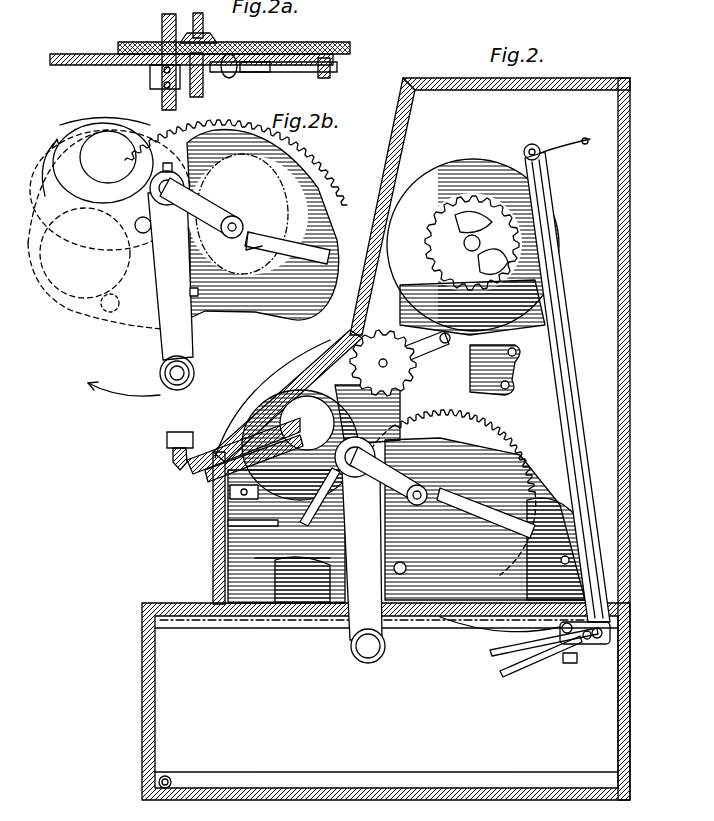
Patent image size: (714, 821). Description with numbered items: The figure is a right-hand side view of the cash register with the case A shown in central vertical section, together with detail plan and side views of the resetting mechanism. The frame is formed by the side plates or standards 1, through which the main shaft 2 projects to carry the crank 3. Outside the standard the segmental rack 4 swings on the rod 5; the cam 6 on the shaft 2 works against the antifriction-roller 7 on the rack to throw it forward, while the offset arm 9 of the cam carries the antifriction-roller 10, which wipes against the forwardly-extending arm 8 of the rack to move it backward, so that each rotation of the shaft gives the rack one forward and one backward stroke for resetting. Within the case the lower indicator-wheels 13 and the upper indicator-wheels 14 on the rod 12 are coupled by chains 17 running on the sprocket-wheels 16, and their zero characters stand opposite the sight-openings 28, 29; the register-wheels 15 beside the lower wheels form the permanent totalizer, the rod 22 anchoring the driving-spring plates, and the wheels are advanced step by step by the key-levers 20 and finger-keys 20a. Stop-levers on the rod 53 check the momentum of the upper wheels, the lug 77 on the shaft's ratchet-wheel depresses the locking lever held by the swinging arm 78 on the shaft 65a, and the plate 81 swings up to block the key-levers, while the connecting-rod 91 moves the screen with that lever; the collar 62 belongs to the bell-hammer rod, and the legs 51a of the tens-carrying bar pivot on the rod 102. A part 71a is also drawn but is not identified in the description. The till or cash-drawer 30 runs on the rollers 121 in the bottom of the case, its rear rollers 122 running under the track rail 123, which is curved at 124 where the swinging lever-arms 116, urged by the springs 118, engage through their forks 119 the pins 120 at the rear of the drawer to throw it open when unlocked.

In FIG. 2, the side plates or standards 1 is at (485, 438).
In FIG. 2A, the main shaft 2 is at (161, 25).
In FIG. 2B, the main shaft 2 is at (128, 205).
In FIG. 2, the main shaft 2 is at (290, 420).
In FIG. 2B, the crank 3 is at (171, 276).
In FIG. 2, the crank 3 is at (358, 538).
In FIG. 2A, the segmental rack 4 is at (296, 48).
In FIG. 2B, the segmental rack 4 is at (312, 168).
In FIG. 2, the segmental rack 4 is at (500, 430).
In FIG. 2A, the axis or rod 5 is at (203, 22).
In FIG. 2B, the axis or rod 5 is at (200, 300).
In FIG. 2, the axis or rod 5 is at (402, 575).
In FIG. 2A, the cam 6 is at (113, 128).
In FIG. 2B, the cam 6 is at (113, 128).
In FIG. 2, the cam 6 is at (240, 438).
In FIG. 2A, the antifriction-roller 7 is at (150, 70).
In FIG. 2B, the antifriction-roller 7 is at (140, 235).
In FIG. 2, the antifriction-roller 7 is at (302, 580).
In FIG. 2A, the forwardly-extending arm 8 is at (282, 68).
In FIG. 2B, the forwardly-extending arm 8 is at (270, 238).
In FIG. 2, the forwardly-extending arm 8 is at (530, 500).
In FIG. 2A, the offset arm 9 is at (212, 80).
In FIG. 2B, the offset arm 9 is at (218, 228).
In FIG. 2, the offset arm 9 is at (430, 490).
In FIG. 2A, the antifriction-roller 10 is at (238, 70).
In FIG. 2B, the antifriction-roller 10 is at (238, 220).
In FIG. 2, the antifriction-roller 10 is at (433, 482).
In FIG. 2, the rod 12 is at (462, 232).
In FIG. 2, the indicator-wheels 13 is at (350, 352).
In FIG. 2, the second series of indicator-wheels 14 is at (468, 170).
In FIG. 2, the register-wheels 15 is at (352, 363).
In FIG. 2, the sprocket or chain wheel 16 is at (490, 205).
In FIG. 2, the chains 17 is at (505, 328).
In FIG. 2, the key-levers 20 is at (192, 474).
In FIG. 2, the finger-keys 20a is at (167, 440).
In FIG. 2, the rod 22 is at (456, 339).
In FIG. 2, the sight-opening 28 is at (330, 338).
In FIG. 2, the sight-opening 29 is at (386, 208).
In FIG. 2, the till or cash-drawer 30 is at (386, 439).
In FIG. 2, the legs 51a is at (330, 556).
In FIG. 2, the rod 53 is at (517, 353).
In FIG. 2, the fixed collar 62 is at (316, 505).
In FIG. 2, the shaft 65a is at (242, 481).
In FIG. 2, the pin 71a is at (509, 384).
In FIG. 2, the lug 77 is at (501, 360).
In FIG. 2, the swinging arm 78 is at (275, 512).
In FIG. 2, the plate 81 is at (262, 430).
In FIG. 2, the connecting-rod 91 is at (400, 470).
In FIG. 2, the rod or axis 102 is at (350, 600).
In FIG. 2, the swinging lever-arms 116 is at (576, 425).
In FIG. 2, the springs 118 is at (570, 148).
In FIG. 2, the forks 119 is at (537, 662).
In FIG. 2, the pins 120 is at (597, 648).
In FIG. 2, the rollers 121 is at (168, 777).
In FIG. 2, the rollers 122 is at (622, 615).
In FIG. 2, the track rail 123 is at (228, 628).
In FIG. 2, the curved portion of track-rails 124 is at (487, 628).
In FIG. 2, the case A is at (630, 312).